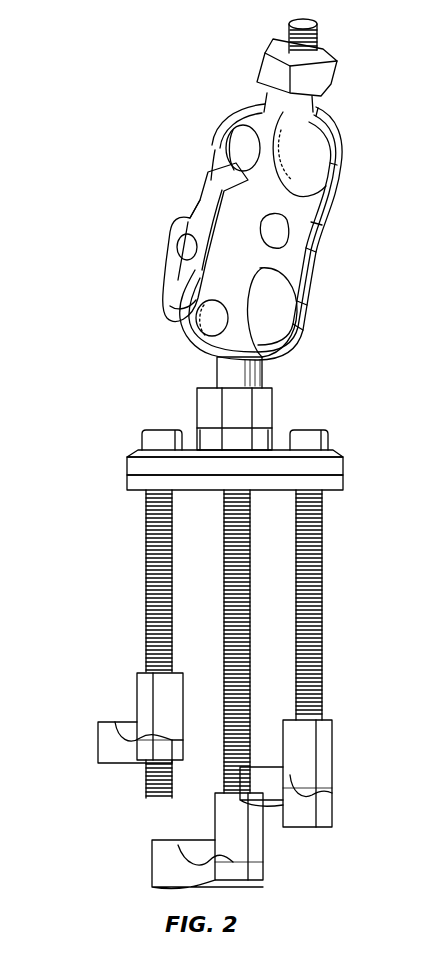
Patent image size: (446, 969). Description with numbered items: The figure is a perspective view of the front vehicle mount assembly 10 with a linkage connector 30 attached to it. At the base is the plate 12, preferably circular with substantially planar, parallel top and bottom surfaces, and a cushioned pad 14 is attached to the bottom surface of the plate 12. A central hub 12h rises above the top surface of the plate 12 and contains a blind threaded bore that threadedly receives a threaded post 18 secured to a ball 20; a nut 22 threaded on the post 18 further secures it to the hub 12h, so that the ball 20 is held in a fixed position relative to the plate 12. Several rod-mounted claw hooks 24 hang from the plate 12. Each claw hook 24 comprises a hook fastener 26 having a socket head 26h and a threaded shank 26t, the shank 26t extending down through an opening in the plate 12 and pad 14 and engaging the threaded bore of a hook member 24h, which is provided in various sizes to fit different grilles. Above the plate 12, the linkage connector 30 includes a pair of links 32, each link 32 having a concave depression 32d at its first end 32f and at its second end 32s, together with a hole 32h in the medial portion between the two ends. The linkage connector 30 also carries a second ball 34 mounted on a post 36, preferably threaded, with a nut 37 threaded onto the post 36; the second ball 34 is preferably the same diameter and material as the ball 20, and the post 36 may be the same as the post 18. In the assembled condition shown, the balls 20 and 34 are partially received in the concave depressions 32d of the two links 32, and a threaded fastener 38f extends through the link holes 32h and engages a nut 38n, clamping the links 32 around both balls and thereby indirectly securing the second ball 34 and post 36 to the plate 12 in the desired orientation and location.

The front vehicle mount assembly 10 is at (221, 630).
The plate 12 is at (128, 468).
The hub 12h is at (207, 438).
The cushioned pad 14 is at (128, 483).
The threaded post 18 is at (229, 372).
The ball 20 is at (280, 337).
The nut 22 is at (262, 408).
The rod-mounted claw hook 24 is at (323, 626).
The hook member 24h is at (318, 756).
The hook fastener 26 is at (145, 582).
The head 26h is at (325, 441).
The threaded shank 26t is at (145, 636).
The linkage connector 30 is at (265, 202).
The link 32 is at (307, 308).
The concave depression 32d is at (231, 148).
The first end 32f is at (192, 348).
The hole 32h is at (290, 287).
The second end 32s is at (236, 118).
The second ball 34 is at (313, 153).
The post 36 is at (319, 37).
The nut 37 is at (317, 80).
The threaded fastener 38f is at (277, 233).
The nut 38n is at (172, 281).